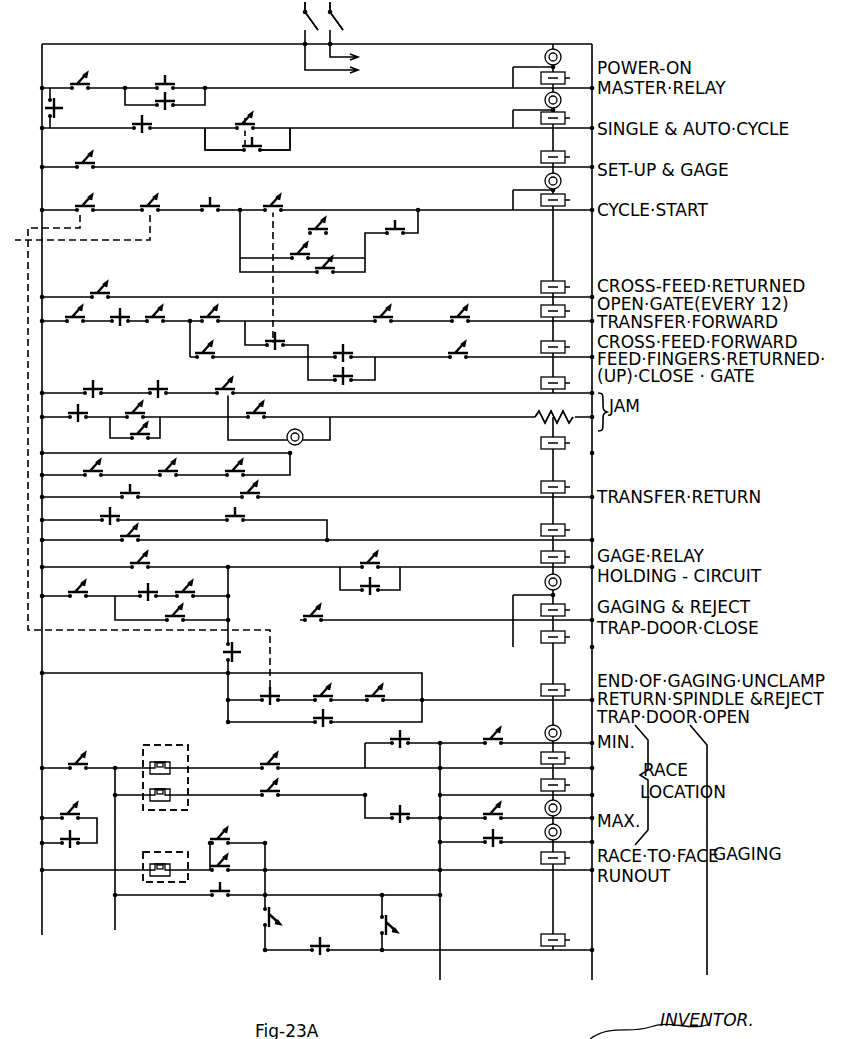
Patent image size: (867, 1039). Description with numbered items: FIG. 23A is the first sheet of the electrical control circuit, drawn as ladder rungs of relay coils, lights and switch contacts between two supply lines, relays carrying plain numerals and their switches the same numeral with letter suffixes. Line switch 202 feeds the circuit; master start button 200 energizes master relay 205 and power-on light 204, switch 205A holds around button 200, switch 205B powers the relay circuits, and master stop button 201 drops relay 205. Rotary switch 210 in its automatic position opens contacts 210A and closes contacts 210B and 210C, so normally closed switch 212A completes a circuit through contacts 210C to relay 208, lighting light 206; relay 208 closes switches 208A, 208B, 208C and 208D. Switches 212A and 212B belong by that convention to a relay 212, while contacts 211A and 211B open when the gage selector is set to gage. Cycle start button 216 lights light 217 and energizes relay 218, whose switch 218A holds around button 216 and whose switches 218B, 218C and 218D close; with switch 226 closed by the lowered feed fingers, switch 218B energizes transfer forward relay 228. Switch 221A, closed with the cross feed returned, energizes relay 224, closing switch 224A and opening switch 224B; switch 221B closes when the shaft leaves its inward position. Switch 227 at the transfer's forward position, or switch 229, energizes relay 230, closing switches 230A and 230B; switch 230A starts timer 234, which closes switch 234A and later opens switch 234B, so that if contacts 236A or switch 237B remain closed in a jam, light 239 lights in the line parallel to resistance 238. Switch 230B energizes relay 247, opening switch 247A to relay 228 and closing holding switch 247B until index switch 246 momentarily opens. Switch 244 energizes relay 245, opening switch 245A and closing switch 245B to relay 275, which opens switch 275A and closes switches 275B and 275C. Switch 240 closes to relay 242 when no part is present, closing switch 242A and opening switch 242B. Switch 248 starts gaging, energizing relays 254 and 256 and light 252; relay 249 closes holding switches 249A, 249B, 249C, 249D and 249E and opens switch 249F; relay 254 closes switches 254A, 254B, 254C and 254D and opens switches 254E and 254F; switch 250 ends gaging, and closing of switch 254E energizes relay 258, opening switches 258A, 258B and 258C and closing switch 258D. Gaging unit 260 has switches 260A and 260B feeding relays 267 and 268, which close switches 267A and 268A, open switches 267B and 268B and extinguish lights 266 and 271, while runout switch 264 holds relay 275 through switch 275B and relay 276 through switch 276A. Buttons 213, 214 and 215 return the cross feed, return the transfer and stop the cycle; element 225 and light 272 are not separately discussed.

The master start push button 200 is at (172, 80).
The master stop button 201 is at (88, 84).
The switch 202 is at (345, 20).
The light 204 is at (563, 50).
The master relay 205 is at (560, 72).
The relay operated switch 205A is at (188, 109).
The switch 205B is at (53, 106).
The light 206 is at (545, 100).
The relay 208 is at (546, 120).
The switch 208A is at (300, 336).
The switch 208B is at (376, 371).
The switch 208C is at (96, 388).
The switch 208D is at (262, 698).
The rotary switch 210 is at (262, 123).
The switch contacts 210A is at (291, 138).
The switch contacts 210B is at (318, 227).
The switch contacts 210C is at (262, 153).
The switch contacts 211A is at (91, 163).
The switch contacts 211B is at (88, 795).
The set-up and gage relay coil 212 is at (541, 158).
The switch 212A is at (146, 131).
The relay contact 212B is at (192, 591).
The button 213 is at (88, 204).
The button 214 is at (152, 204).
The button 215 is at (213, 204).
The cycle start button 216 is at (278, 204).
The light 217 is at (545, 182).
The relay 218 is at (553, 212).
The switch 218A is at (419, 230).
The switch 218B is at (124, 328).
The switch 218C is at (141, 492).
The switch 218D is at (224, 651).
The switch 221A is at (96, 300).
The switch 221B is at (305, 256).
The relay 224 is at (553, 281).
The switch 224A is at (390, 315).
The switch 224B is at (82, 591).
The limit switch 225 is at (78, 326).
The switch 226 is at (212, 326).
The switch 227 is at (205, 362).
The transfer forward relay 228 is at (540, 312).
The switch 229 is at (351, 347).
The relay 230 is at (540, 348).
The switch 230A is at (158, 388).
The switch 230B is at (121, 515).
The timer 234 is at (540, 384).
The switch 234A is at (226, 396).
The switch 234B is at (261, 413).
The switch contacts 236A is at (128, 422).
The switch 237B is at (146, 441).
The resistance 238 is at (540, 417).
The light 239 is at (304, 437).
The switch 240 is at (233, 469).
The relay 242 is at (540, 443).
The switch 242A is at (172, 470).
The switch 242B is at (88, 750).
The switch 244 is at (256, 494).
The relay 245 is at (550, 481).
The switch 245A is at (455, 352).
The switch 245B is at (68, 851).
The switch 246 is at (129, 538).
The relay 247 is at (550, 524).
The switch 247A is at (462, 315).
The switch 247B is at (246, 527).
The switch 248 is at (140, 571).
The relay 249 is at (540, 557).
The switch 249A is at (74, 466).
The switch 249B is at (372, 586).
The switch 249C is at (146, 601).
The switch 249D is at (328, 690).
The switch 249E is at (230, 892).
The switch 249F is at (230, 838).
The switch 250 is at (315, 616).
The light 252 is at (545, 582).
The relay 254 is at (540, 610).
The switch 254A is at (375, 563).
The switch 254B is at (178, 615).
The switch 254C is at (276, 763).
The switch 254D is at (276, 791).
The switch 254E is at (380, 691).
The switch 254F is at (290, 915).
The relay 256 is at (553, 643).
The relay 258 is at (553, 684).
The switch 258A is at (335, 268).
The switch 258B is at (158, 316).
The switch 258C is at (78, 425).
The switch 258D is at (335, 726).
The gaging unit 260 is at (166, 745).
The switch 260A is at (160, 762).
The switch 260B is at (160, 812).
The OK switch 264 is at (162, 883).
The light 266 is at (548, 733).
The relay 267 is at (540, 758).
The switch 267A is at (411, 742).
The switch 267B is at (492, 739).
The relay 268 is at (540, 785).
The switch 268A is at (390, 826).
The switch 268B is at (490, 814).
The light 271 is at (562, 806).
The race-to-face indicator lamp 272 is at (562, 833).
The relay 275 is at (553, 866).
The switch 275A is at (492, 849).
The holding switch 275B is at (236, 862).
The switch 275C is at (390, 927).
The relay 276 is at (548, 934).
The holding switch 276A is at (320, 960).